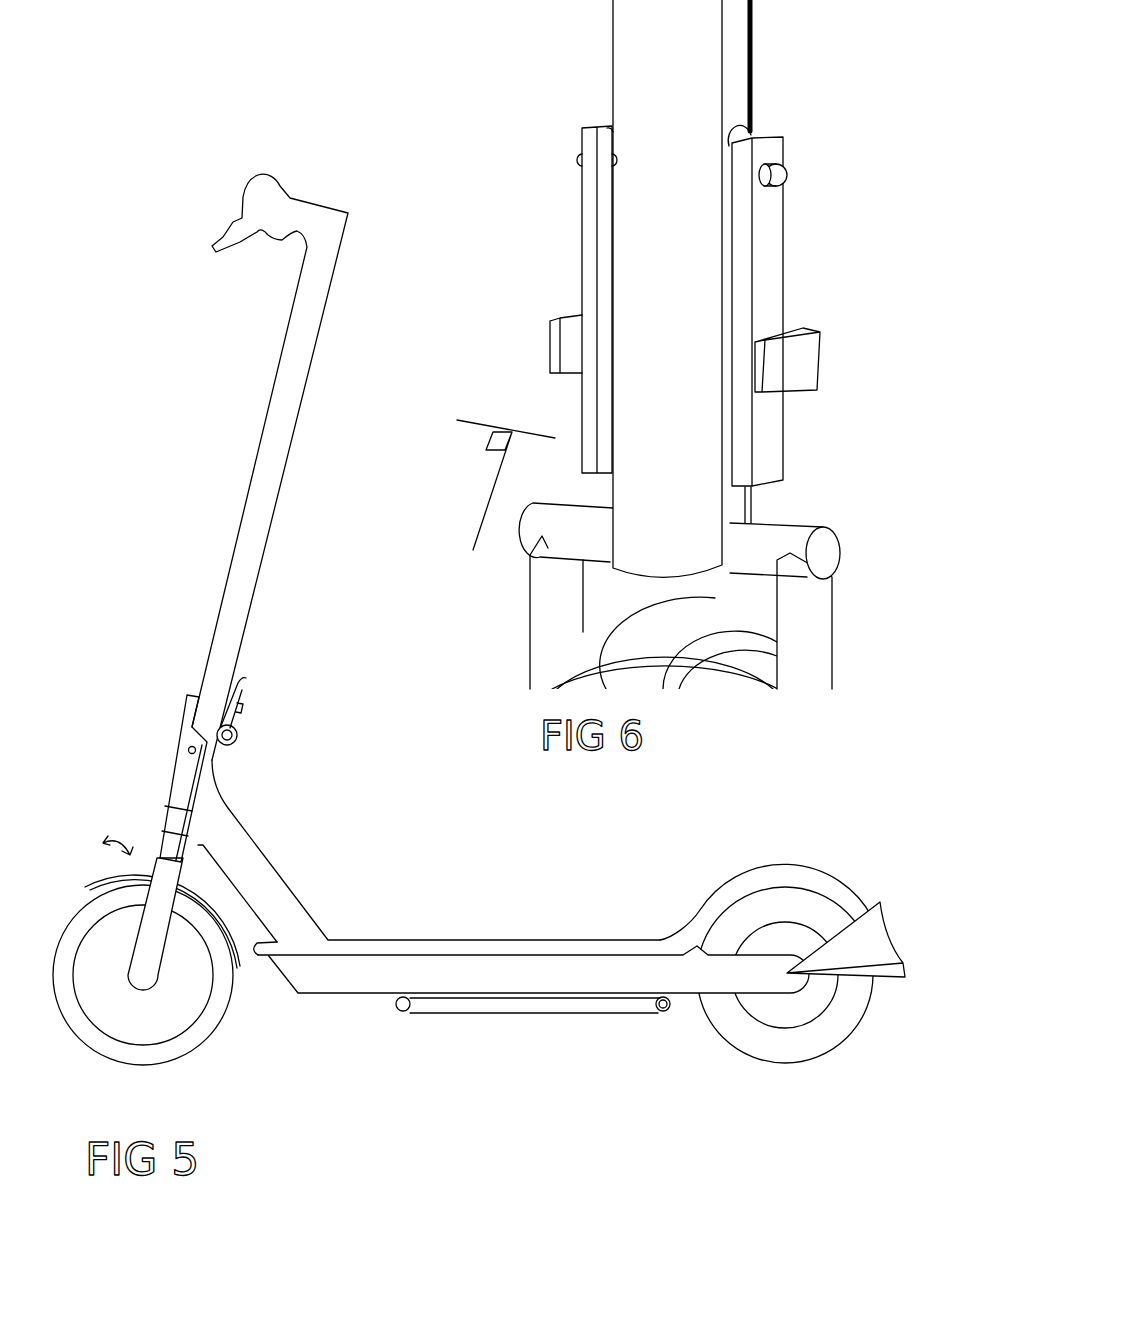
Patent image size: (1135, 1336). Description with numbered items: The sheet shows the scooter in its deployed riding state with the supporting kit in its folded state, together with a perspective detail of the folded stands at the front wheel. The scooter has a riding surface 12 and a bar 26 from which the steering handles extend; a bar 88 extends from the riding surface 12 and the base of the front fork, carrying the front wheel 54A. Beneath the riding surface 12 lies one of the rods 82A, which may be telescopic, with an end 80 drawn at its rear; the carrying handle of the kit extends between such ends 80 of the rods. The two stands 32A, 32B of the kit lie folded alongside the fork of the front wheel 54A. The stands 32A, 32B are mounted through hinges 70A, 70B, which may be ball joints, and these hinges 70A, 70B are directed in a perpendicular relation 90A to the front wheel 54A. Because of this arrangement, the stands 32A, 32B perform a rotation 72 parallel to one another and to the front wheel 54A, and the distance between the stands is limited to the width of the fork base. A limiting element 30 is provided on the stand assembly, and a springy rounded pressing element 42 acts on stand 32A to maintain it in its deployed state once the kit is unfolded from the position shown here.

In FIG. 5, the riding surface 12 is at (527, 950).
In FIG. 5, the bar of scooter 26 is at (262, 481).
In FIG. 6, the limiting element 30 is at (793, 367).
In FIG. 5, the limiting element 30 is at (187, 815).
In FIG. 6, the stand 32A is at (782, 295).
In FIG. 5, the stand 32A is at (177, 775).
In FIG. 6, the stand 32B is at (593, 248).
In FIG. 6, the springy rounded pressing element 42 is at (749, 129).
In FIG. 6, the front wheel 54A is at (728, 636).
In FIG. 6, the hinge 70A is at (782, 175).
In FIG. 5, the hinge 70A is at (189, 748).
In FIG. 6, the hinge 70B is at (610, 128).
In FIG. 5, the rotation 72 is at (131, 831).
In FIG. 5, the end of telescopic rods 80 is at (665, 1013).
In FIG. 5, the telescopic rod 82A is at (518, 1003).
In FIG. 5, the bar 88 is at (290, 917).
In FIG. 6, the perpendicular relation 90A is at (502, 432).